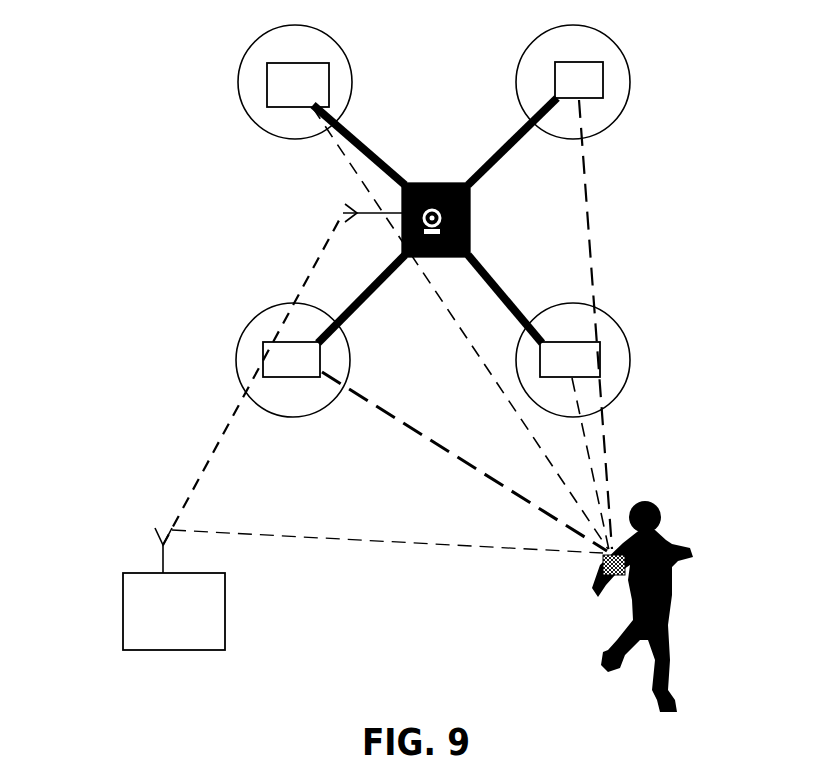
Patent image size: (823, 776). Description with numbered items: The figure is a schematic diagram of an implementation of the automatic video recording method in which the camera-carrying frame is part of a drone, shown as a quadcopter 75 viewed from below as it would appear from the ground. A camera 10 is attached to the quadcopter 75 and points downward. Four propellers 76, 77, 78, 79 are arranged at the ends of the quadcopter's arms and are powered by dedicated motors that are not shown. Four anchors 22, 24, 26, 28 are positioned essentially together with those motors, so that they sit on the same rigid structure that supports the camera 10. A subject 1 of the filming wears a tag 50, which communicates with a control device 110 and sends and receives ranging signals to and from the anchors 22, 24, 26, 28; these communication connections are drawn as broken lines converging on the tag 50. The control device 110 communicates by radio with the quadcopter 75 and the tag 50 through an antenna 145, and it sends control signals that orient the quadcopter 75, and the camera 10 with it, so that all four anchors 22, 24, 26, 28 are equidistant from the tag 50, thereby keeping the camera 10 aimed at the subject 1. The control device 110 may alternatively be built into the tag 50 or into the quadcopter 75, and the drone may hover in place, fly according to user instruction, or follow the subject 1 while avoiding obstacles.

The subject 1 is at (622, 610).
The camera 10 is at (470, 222).
The anchor 22 is at (312, 98).
The anchor 24 is at (592, 93).
The anchor 26 is at (306, 373).
The anchor 28 is at (584, 373).
The tag 50 is at (603, 557).
The quadcopter 75 is at (352, 160).
The propeller 76 is at (254, 52).
The propeller 77 is at (245, 336).
The propeller 78 is at (528, 40).
The propeller 79 is at (620, 326).
The control device 110 is at (195, 624).
The antenna 145 is at (163, 549).